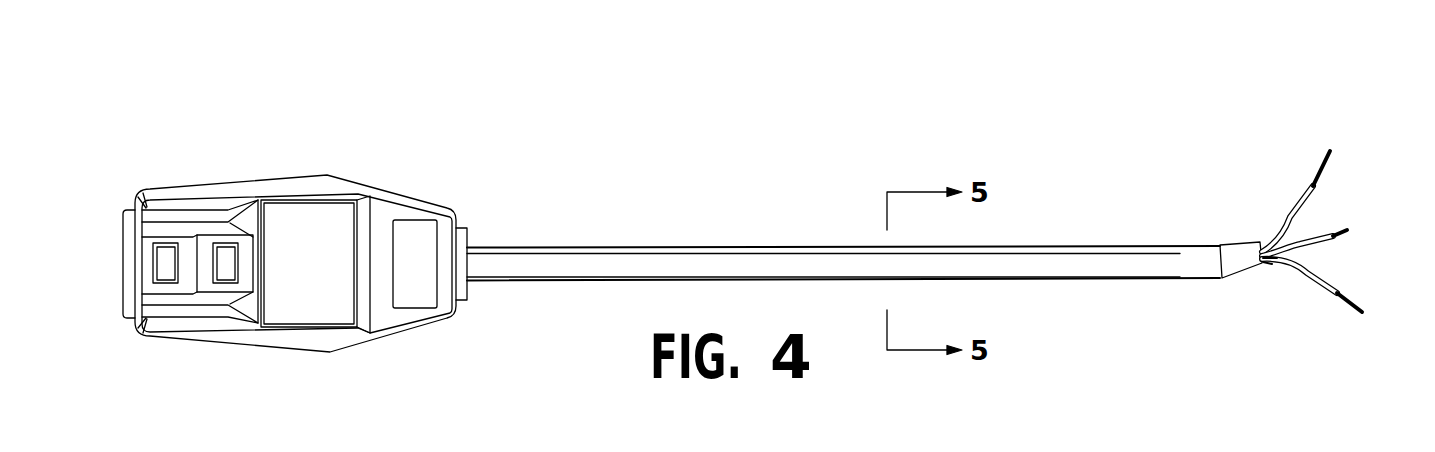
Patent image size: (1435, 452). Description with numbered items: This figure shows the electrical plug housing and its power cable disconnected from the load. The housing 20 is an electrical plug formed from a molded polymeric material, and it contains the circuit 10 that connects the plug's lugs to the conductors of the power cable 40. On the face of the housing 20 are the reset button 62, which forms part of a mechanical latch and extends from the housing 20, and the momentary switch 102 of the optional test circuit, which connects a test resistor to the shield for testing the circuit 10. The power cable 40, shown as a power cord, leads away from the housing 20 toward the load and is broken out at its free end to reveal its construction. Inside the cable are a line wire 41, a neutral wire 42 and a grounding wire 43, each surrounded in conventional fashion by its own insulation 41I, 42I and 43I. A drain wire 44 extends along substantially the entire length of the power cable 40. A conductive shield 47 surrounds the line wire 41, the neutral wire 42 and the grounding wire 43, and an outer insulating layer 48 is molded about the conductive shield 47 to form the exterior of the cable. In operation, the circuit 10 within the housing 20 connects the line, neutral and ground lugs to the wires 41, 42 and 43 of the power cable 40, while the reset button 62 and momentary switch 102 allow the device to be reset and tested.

The circuit 10 is at (150, 104).
The housing 20 is at (314, 348).
The power cable 40 is at (747, 257).
The line wire 41 is at (1362, 313).
The insulation 41I is at (1336, 293).
The neutral wire 42 is at (1333, 154).
The insulation 42I is at (1311, 188).
The grounding wire 43 is at (1343, 231).
The insulation 43I is at (1325, 232).
The drain wire 44 is at (1268, 263).
The conductive shield 47 is at (1233, 252).
The outer insulating layer 48 is at (1128, 255).
The reset button 62 is at (167, 257).
The momentary switch 102 is at (227, 260).